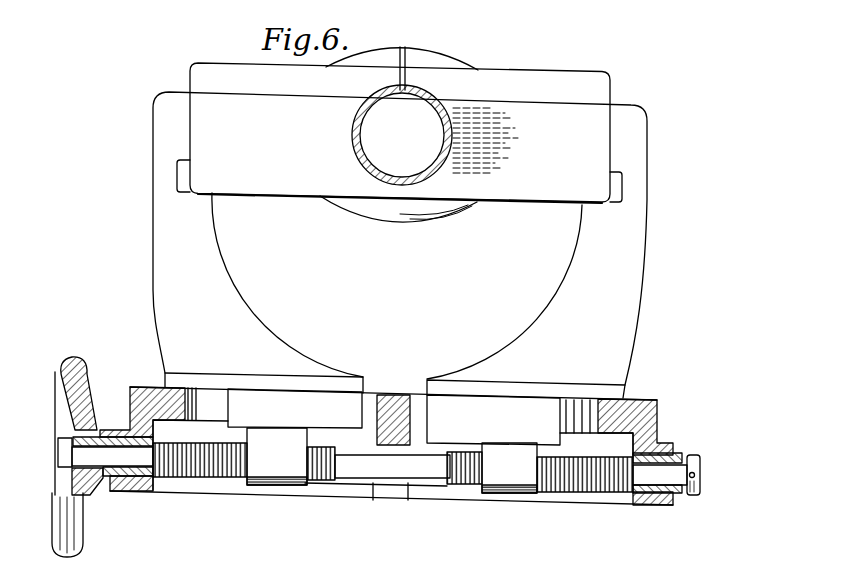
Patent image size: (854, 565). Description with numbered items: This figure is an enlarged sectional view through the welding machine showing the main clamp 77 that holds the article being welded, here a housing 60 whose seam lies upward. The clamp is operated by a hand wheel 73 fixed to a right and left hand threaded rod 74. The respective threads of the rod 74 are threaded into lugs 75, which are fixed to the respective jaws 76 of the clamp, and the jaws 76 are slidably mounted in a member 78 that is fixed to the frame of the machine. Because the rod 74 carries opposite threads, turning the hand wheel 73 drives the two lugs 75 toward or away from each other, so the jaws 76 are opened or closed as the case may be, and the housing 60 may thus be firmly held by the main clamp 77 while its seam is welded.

The housing 60 is at (478, 193).
The hand wheel 73 is at (73, 519).
The right and left hand threaded rod 74 is at (360, 482).
The lugs 75 is at (273, 485).
The jaws 76 is at (163, 293).
The main clamp 77 is at (397, 319).
The member 78 is at (657, 408).